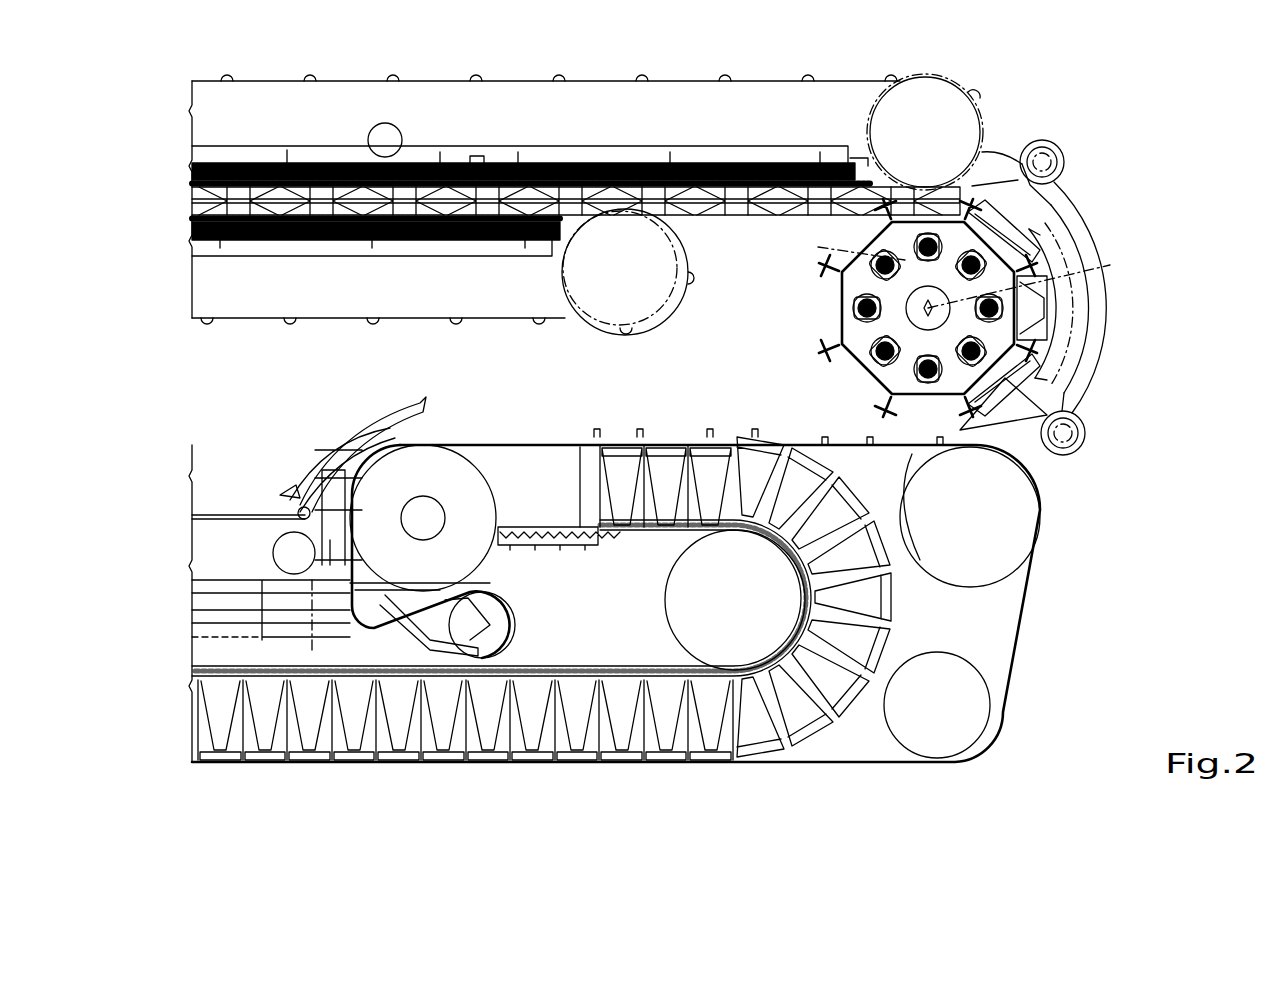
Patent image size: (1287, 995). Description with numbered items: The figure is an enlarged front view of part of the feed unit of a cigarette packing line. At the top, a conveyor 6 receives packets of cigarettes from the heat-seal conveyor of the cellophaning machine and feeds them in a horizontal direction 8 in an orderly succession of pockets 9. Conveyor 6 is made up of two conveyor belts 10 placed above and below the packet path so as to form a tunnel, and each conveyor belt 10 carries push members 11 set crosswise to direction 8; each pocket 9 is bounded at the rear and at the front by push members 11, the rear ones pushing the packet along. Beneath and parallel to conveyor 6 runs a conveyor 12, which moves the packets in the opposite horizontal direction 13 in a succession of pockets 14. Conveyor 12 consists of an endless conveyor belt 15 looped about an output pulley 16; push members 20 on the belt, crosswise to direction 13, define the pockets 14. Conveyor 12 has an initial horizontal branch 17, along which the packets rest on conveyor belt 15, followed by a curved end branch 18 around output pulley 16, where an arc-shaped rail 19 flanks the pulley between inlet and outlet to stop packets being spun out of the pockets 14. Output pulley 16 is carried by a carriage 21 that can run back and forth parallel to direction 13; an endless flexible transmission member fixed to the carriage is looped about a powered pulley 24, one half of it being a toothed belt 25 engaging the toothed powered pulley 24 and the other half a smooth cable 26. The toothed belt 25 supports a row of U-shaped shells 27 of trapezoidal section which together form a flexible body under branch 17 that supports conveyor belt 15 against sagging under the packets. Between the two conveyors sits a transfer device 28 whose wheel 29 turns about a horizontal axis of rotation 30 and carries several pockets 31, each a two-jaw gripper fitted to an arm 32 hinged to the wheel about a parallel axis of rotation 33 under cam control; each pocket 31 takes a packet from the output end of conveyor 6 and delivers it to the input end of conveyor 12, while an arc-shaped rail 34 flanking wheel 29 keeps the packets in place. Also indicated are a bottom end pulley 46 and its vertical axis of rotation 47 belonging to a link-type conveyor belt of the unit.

The conveyor 6 is at (612, 218).
The horizontal direction 8 is at (660, 38).
The pocket 9 is at (600, 193).
The conveyor belt 10 is at (928, 76).
The push member 11 is at (980, 96).
The conveyor 12 is at (673, 571).
The horizontal direction 13 is at (640, 412).
The pocket 14 is at (688, 438).
The endless conveyor belt 15 is at (885, 455).
The output pulley 16 is at (480, 497).
The initial horizontal branch 17 is at (752, 410).
The curved end branch 18 is at (285, 586).
The arc-shaped rail 19 is at (372, 422).
The push member 20 is at (826, 436).
The carriage 21 is at (512, 570).
The powered pulley 24 is at (680, 600).
The toothed belt 25 is at (594, 546).
The smooth cable 26 is at (236, 520).
The U-shaped shell 27 is at (630, 462).
The transfer device 28 is at (1112, 318).
The wheel 29 is at (1000, 342).
The axis of rotation 30 is at (1048, 272).
The pocket 31 is at (901, 308).
The arm 32 is at (850, 270).
The axis of rotation 33 is at (843, 249).
The arc-shaped rail 34 is at (1036, 342).
The bottom end pulley 46 is at (200, 638).
The axis of rotation 47 is at (312, 650).